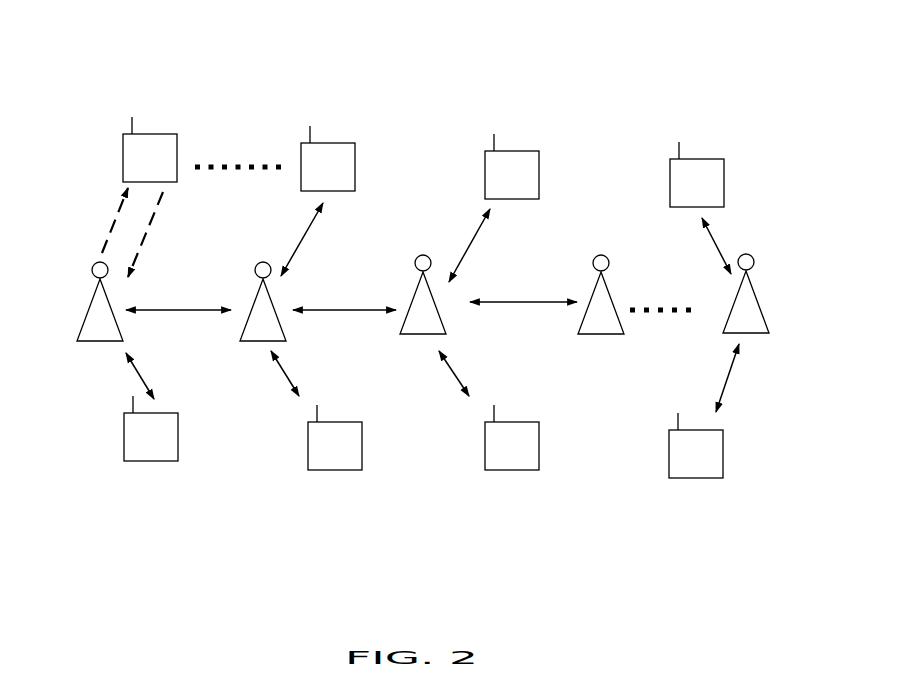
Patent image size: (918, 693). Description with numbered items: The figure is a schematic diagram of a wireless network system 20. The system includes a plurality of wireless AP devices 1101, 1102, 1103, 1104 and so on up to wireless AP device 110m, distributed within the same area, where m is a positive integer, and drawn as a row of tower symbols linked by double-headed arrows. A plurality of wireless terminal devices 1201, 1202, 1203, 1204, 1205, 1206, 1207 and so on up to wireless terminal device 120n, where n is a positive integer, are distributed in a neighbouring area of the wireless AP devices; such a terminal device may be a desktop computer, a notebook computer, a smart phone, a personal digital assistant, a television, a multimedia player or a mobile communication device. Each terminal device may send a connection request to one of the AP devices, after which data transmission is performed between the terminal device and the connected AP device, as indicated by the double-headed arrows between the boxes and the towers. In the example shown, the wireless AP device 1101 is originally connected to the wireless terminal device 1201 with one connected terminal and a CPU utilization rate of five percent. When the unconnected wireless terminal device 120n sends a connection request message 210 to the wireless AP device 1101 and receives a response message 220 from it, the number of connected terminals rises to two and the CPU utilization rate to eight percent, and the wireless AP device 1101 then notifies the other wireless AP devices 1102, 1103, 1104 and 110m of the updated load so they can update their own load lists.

The wireless network system 20 is at (90, 68).
The wireless AP device 1101 is at (88, 304).
The wireless AP device 1102 is at (253, 343).
The wireless AP device 1103 is at (421, 336).
The wireless AP device 1104 is at (589, 336).
The wireless AP device 110m is at (762, 304).
The wireless terminal device 120n is at (172, 134).
The wireless terminal device 1201 is at (141, 462).
The wireless terminal device 1202 is at (325, 471).
The wireless terminal device 1203 is at (507, 471).
The wireless terminal device 1204 is at (688, 479).
The wireless terminal device 1205 is at (709, 159).
The wireless terminal device 1206 is at (525, 151).
The wireless terminal device 1207 is at (348, 143).
The connection request message 210 is at (163, 204).
The response message 220 is at (116, 213).